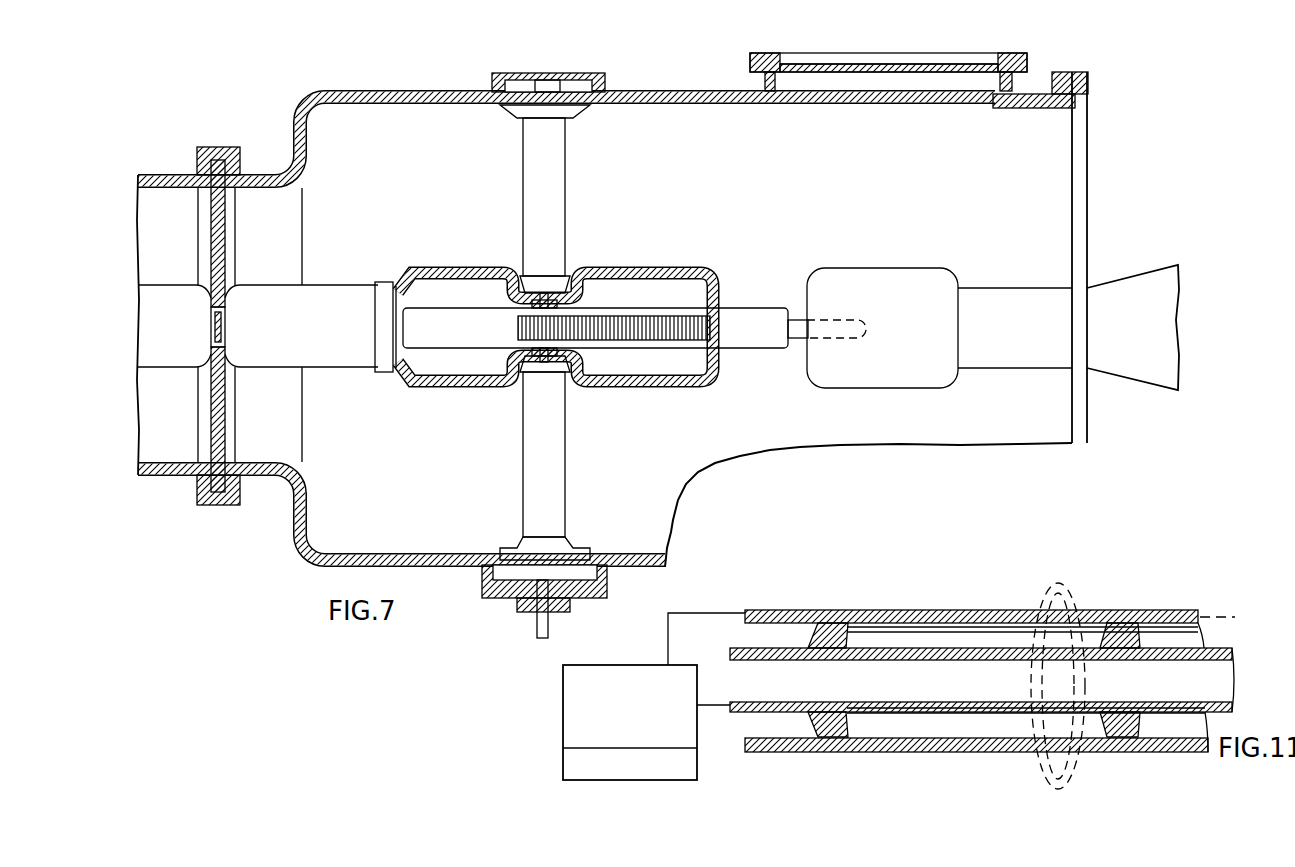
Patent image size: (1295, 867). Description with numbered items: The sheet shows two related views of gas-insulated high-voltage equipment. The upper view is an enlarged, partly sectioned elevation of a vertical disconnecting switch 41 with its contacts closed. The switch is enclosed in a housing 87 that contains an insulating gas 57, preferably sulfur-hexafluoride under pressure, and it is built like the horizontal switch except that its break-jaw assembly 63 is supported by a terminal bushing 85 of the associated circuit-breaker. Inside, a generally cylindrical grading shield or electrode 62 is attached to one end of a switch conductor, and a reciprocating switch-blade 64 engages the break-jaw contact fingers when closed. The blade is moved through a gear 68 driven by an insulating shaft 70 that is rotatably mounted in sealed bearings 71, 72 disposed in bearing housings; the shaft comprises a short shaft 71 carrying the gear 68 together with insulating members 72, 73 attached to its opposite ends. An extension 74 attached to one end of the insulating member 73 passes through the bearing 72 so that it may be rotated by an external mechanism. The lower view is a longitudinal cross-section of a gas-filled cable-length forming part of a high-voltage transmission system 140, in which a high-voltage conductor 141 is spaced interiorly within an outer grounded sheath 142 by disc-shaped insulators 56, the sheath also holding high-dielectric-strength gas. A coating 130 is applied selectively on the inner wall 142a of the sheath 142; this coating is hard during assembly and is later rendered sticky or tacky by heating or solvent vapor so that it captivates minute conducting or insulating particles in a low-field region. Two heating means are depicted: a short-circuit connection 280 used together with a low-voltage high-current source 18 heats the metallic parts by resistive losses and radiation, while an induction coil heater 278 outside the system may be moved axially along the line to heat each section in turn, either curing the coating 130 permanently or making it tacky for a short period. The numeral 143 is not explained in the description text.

In FIG. 7, the low-voltage high-current source 18 is at (563, 698).
In FIG. 7, the vertical disconnecting switch 41 is at (659, 78).
In FIG. 11, the disc-shaped insulators 56 is at (808, 740).
In FIG. 7, the insulating gas 57 is at (390, 117).
In FIG. 7, the grading shield or electrode 62 is at (649, 272).
In FIG. 7, the break-jaw assembly 63 is at (882, 270).
In FIG. 7, the switch-blade 64 is at (742, 310).
In FIG. 7, the gear 68 is at (527, 331).
In FIG. 7, the insulating shaft 70 is at (566, 420).
In FIG. 7, the short shaft 71 is at (549, 300).
In FIG. 7, the insulating member 72 is at (523, 173).
In FIG. 7, the insulating member 73 is at (523, 442).
In FIG. 7, the extension 74 is at (542, 612).
In FIG. 7, the terminal bushing 85 is at (1142, 385).
In FIG. 7, the housing 87 is at (699, 95).
In FIG. 7, the coating 130 is at (311, 534).
In FIG. 11, the coating 130 is at (790, 623).
In FIG. 11, the high-voltage transmission system 140 is at (1028, 600).
In FIG. 11, the high-voltage conductor 141 is at (963, 720).
In FIG. 11, the outer grounded sheath 142 is at (838, 612).
In FIG. 11, the inner wall 142a is at (925, 745).
In FIG. 11, the insulation layer 143 is at (916, 630).
In FIG. 11, the induction coil heater 278 is at (1066, 592).
In FIG. 11, the short-circuit connection 280 is at (1233, 642).